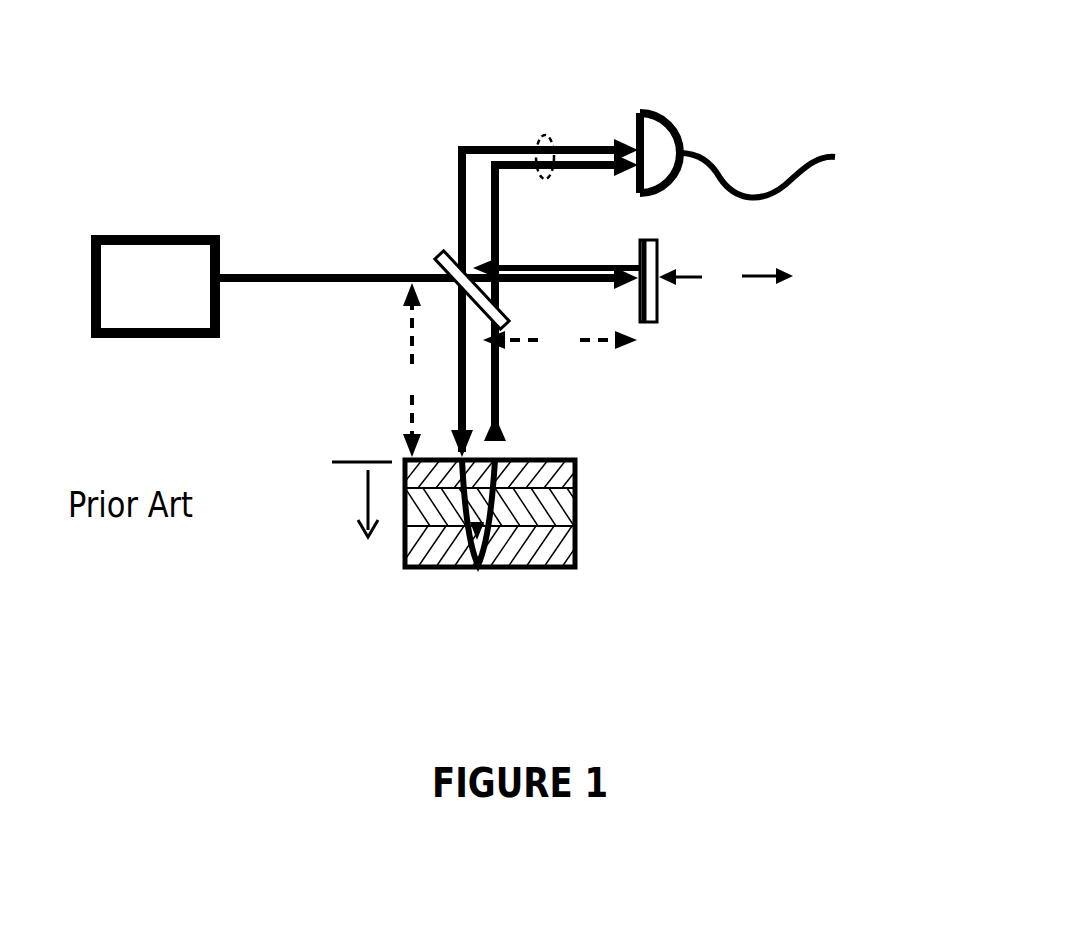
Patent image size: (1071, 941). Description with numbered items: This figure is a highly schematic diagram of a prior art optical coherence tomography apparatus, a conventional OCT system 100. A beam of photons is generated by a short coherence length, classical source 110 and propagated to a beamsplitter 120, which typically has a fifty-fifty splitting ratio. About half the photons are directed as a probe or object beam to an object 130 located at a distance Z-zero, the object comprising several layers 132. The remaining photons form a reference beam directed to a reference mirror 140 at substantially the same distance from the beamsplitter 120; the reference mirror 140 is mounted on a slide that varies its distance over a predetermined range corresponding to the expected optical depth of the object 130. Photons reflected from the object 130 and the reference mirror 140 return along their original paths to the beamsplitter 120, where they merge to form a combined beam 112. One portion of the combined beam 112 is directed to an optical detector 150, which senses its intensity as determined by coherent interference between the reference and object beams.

The conventional OCT system 100 is at (277, 173).
The classical source 110 is at (135, 345).
The combined beam 112 is at (545, 130).
The beamsplitter 120 is at (440, 255).
The object 130 is at (528, 580).
The layers 132 is at (580, 520).
The reference mirror 140 is at (657, 322).
The optical detector 150 is at (667, 120).